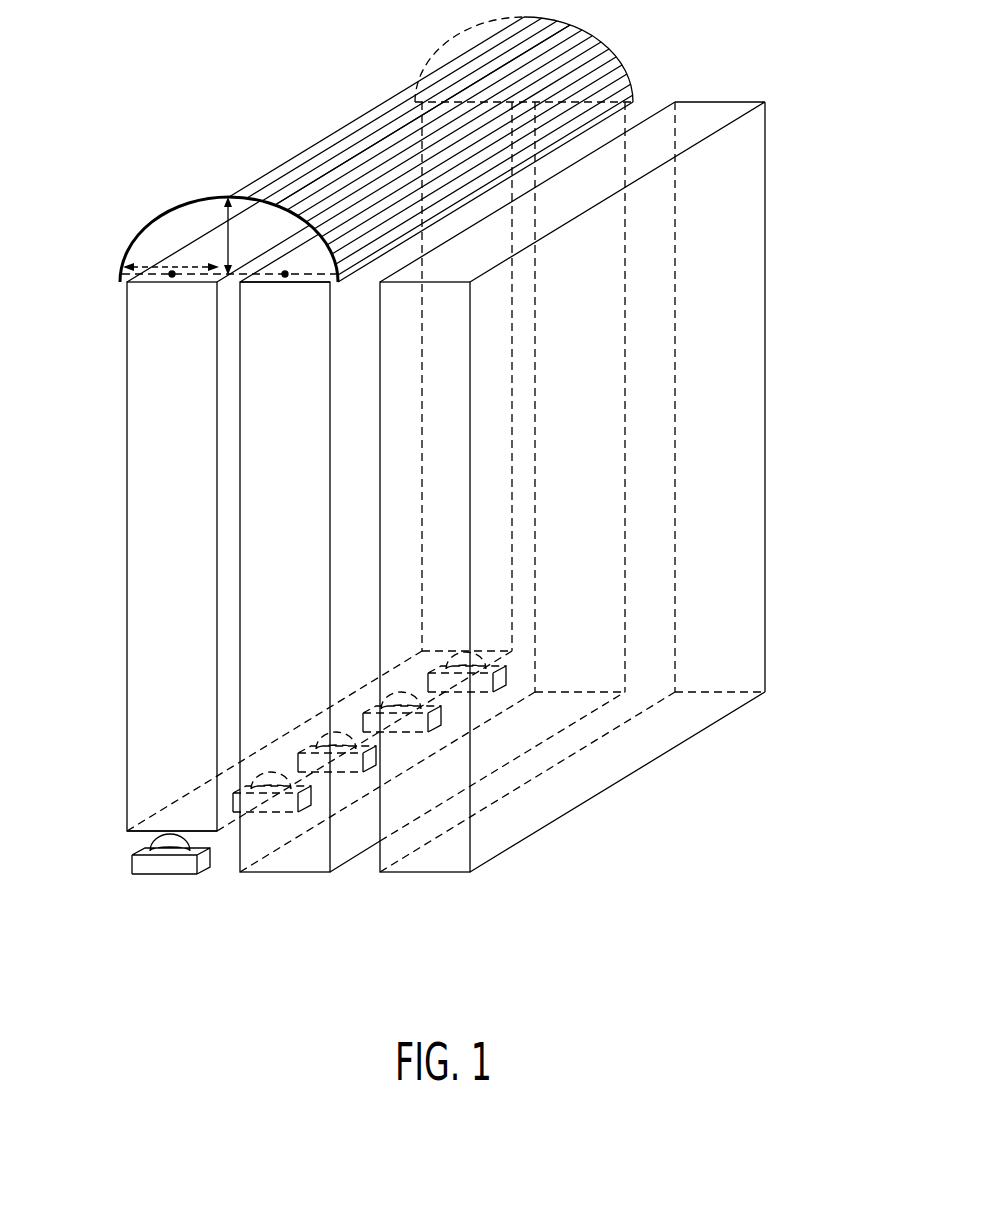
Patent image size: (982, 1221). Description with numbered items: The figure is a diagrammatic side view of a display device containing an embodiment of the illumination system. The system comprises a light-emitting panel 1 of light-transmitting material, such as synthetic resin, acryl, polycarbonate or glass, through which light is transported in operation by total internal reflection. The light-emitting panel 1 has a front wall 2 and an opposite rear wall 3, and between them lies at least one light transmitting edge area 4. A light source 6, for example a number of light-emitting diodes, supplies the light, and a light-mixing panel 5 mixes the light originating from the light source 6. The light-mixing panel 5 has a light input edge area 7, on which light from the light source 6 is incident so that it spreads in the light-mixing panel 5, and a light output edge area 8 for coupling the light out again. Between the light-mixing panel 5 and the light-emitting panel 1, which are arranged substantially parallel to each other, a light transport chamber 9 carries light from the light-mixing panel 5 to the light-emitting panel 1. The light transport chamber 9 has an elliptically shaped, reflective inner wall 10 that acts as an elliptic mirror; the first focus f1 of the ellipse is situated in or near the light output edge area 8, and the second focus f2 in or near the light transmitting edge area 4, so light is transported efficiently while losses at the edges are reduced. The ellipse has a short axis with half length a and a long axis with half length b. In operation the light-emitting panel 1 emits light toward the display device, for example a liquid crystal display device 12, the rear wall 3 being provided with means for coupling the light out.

The light-emitting panel 1 is at (289, 890).
The front wall 2 is at (347, 848).
The rear wall 3 is at (242, 856).
The light transmitting edge area 4 is at (313, 270).
The light-mixing panel 5 is at (110, 510).
The light source 6 is at (164, 843).
The light input edge area 7 is at (172, 814).
The light output edge area 8 is at (250, 212).
The light transport chamber 9 is at (131, 222).
The reflective inner wall 10 is at (284, 213).
The liquid crystal display device 12 is at (780, 510).
The half length of short axis a is at (230, 235).
The half length of long axis b is at (172, 262).
The first focus f1 is at (172, 278).
The second focus f2 is at (285, 278).